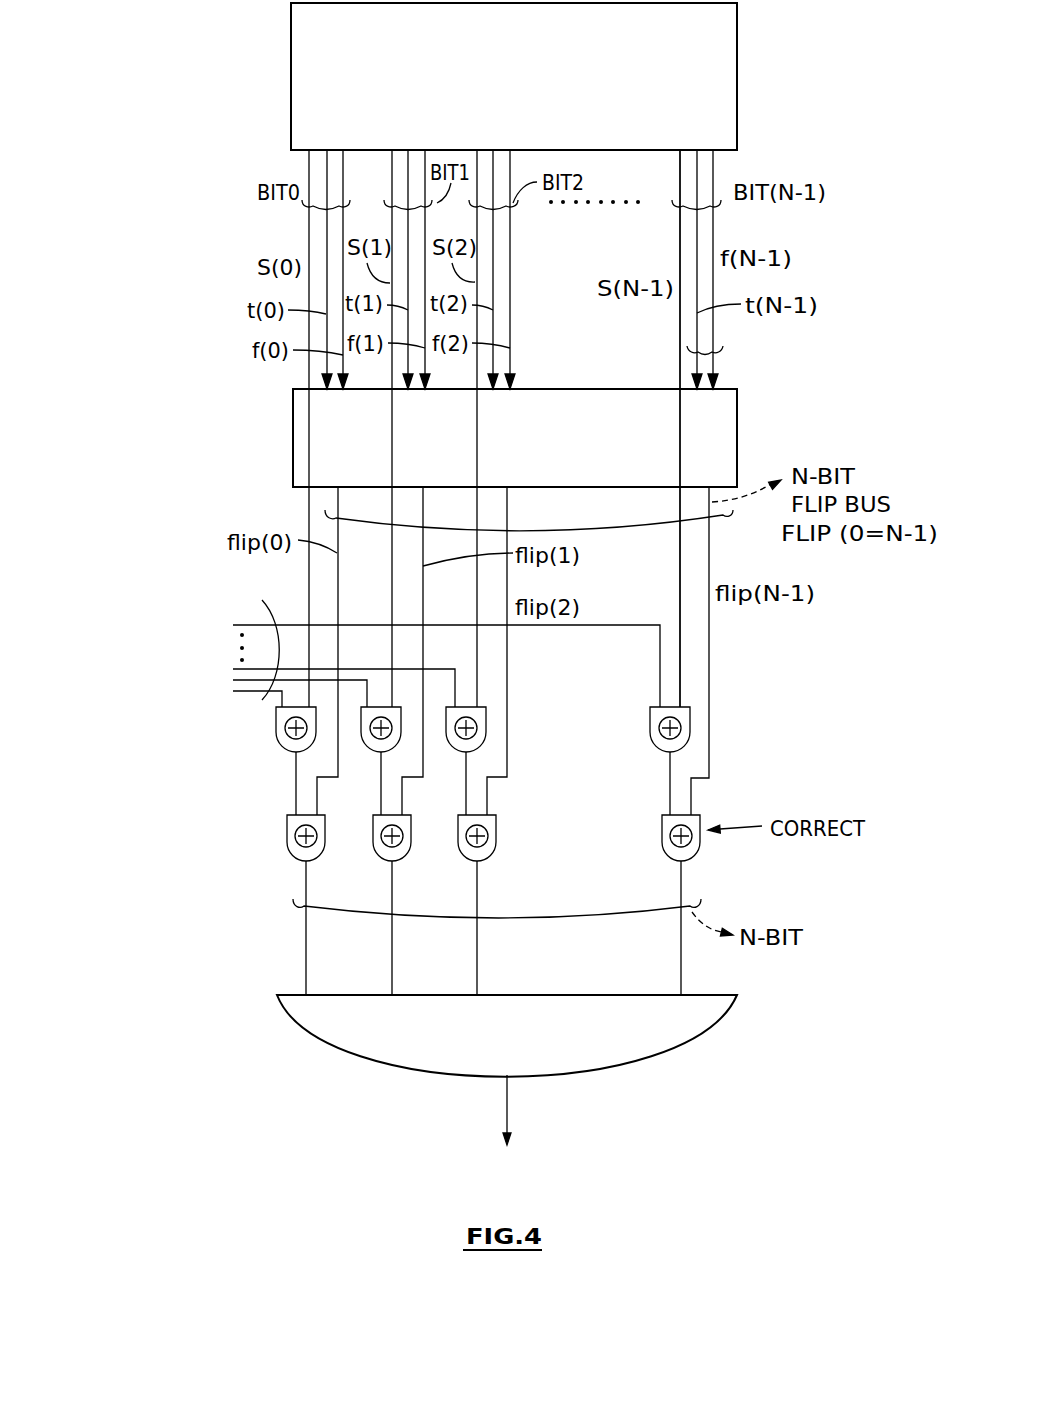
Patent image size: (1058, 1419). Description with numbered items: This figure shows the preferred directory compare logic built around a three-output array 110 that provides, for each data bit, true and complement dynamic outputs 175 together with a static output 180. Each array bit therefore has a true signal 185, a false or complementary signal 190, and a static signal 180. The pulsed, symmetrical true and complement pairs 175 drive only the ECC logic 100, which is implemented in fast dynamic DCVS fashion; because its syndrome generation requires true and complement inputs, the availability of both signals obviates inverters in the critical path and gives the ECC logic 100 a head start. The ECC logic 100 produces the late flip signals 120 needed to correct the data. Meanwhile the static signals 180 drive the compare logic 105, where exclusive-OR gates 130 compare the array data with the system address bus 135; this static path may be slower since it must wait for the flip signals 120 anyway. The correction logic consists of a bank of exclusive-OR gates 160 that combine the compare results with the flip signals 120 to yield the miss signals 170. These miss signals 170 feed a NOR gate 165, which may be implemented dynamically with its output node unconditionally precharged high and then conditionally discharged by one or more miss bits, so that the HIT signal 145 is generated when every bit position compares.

The array 110 is at (742, 80).
The ECC logic 100 is at (278, 438).
The true signal 185 is at (508, 231).
The false signal 190 is at (524, 270).
The true and complement dynamic outputs 175 is at (738, 344).
The static output 180 is at (663, 347).
The flip signals 120 is at (660, 540).
The system address bus 135 is at (268, 618).
The exclusive-OR gates 130 is at (637, 741).
The compare logic 105 is at (605, 733).
The exclusive-OR gates 160 is at (514, 848).
The miss signals 170 is at (622, 929).
The NOR gate 165 is at (709, 1055).
The HIT signal 145 is at (488, 1107).